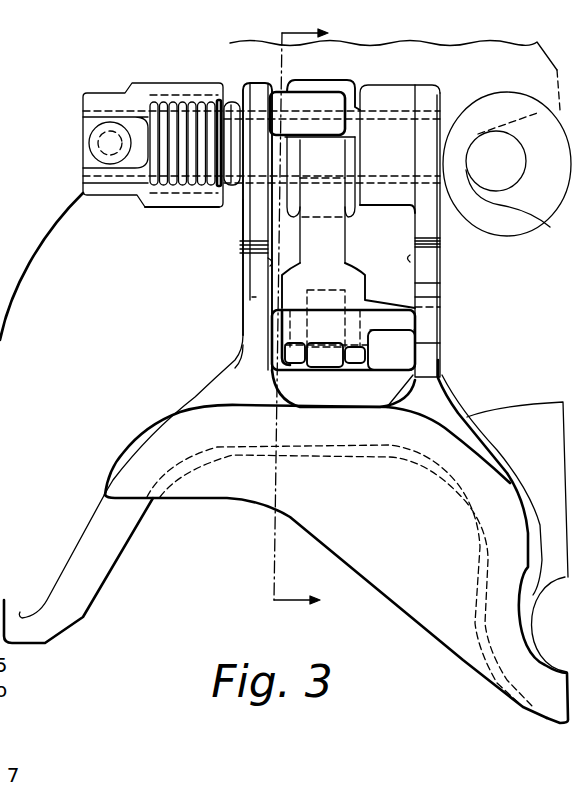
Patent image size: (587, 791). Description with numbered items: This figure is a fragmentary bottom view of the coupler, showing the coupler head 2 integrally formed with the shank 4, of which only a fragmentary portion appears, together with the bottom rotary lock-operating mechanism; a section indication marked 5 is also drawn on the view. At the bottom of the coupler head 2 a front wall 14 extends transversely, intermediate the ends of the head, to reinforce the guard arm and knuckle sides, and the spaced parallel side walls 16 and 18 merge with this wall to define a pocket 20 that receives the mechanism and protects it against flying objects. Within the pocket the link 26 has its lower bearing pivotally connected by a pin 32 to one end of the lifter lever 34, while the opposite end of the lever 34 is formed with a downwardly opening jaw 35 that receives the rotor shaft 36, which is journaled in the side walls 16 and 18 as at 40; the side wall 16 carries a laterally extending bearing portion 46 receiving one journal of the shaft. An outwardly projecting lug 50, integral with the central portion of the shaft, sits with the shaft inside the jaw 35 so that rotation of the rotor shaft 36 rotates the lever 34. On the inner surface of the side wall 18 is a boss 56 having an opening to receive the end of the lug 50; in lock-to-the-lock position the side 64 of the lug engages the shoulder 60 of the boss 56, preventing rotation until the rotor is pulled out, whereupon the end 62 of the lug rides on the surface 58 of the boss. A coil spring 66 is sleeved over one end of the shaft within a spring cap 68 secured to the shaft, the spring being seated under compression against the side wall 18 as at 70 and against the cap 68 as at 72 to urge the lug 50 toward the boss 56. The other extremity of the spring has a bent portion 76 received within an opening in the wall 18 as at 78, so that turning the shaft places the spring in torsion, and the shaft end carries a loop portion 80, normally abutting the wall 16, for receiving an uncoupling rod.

The coupler head 2 is at (49, 222).
The shank 4 is at (537, 60).
The section line 5 is at (301, 317).
The front wall 14 is at (390, 395).
The side wall 16 is at (432, 290).
The side wall 18 is at (262, 297).
The pocket 20 is at (412, 258).
The link 26 is at (316, 352).
The pin 32 is at (260, 327).
The lifter lever 34 is at (337, 233).
The jaw 35 is at (347, 86).
The rotor shaft 36 is at (443, 108).
The journal location 40 is at (403, 110).
The bearing portion 46 is at (377, 93).
The lug 50 is at (293, 110).
The boss 56 is at (250, 190).
The surface 58 is at (288, 175).
The shoulder 60 is at (240, 157).
The end of lug 62 is at (264, 102).
The side of lug 64 is at (222, 83).
The coil spring 66 is at (128, 194).
The spring cap 68 is at (90, 196).
The spring seat 70 is at (229, 105).
The spring seat 72 is at (150, 100).
The bent portion 76 is at (242, 238).
The wall opening 78 is at (242, 265).
The loop portion 80 is at (512, 216).